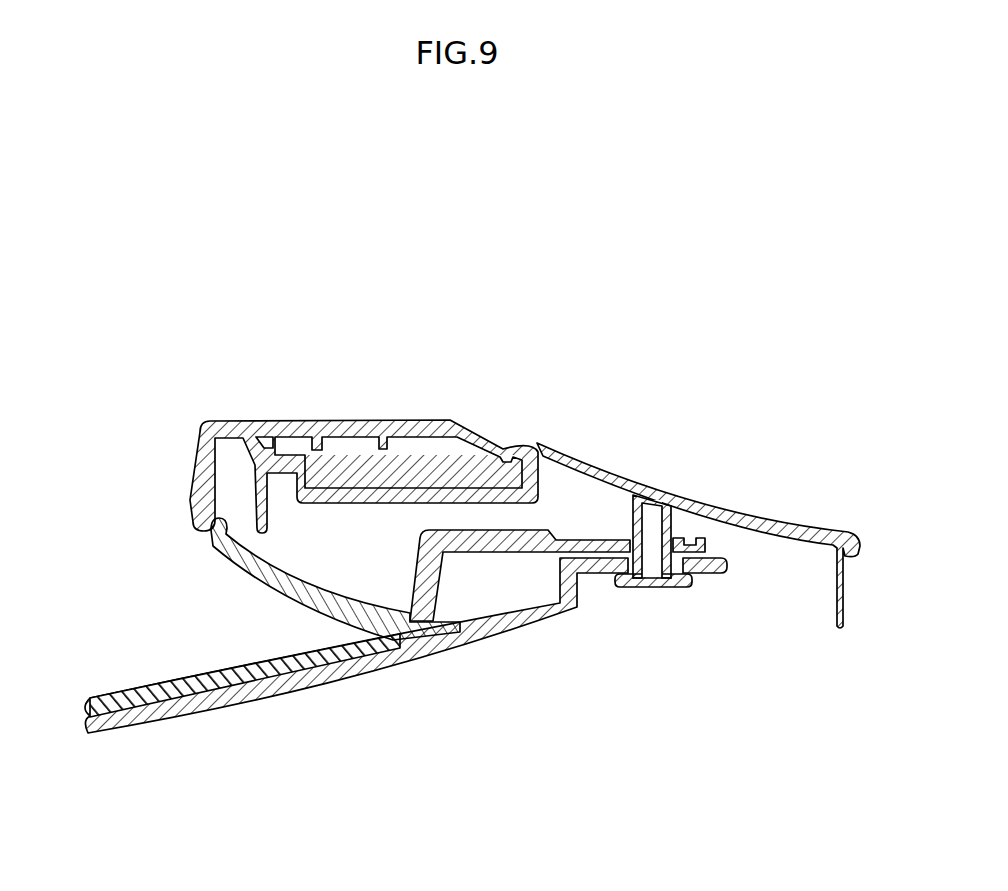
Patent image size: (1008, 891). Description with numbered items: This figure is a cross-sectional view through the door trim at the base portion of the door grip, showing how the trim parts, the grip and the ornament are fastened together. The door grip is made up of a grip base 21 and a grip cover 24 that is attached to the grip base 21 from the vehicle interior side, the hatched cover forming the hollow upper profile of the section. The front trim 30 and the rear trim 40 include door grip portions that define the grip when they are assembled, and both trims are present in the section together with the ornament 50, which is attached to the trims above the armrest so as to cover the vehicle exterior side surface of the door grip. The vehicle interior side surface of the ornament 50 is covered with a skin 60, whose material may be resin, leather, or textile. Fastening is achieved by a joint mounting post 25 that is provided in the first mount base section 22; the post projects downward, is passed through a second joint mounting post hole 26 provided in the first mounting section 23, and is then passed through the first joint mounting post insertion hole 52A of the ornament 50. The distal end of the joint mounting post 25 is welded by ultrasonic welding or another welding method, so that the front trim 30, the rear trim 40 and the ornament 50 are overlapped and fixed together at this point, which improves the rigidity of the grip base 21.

The grip base 21 is at (576, 300).
The first mount base section 22 is at (430, 490).
The first mounting section 23 is at (453, 542).
The grip cover 24 is at (405, 420).
The joint mounting post 25 is at (648, 586).
The second joint mounting post hole 26 is at (672, 514).
The front trim 30 is at (765, 515).
The rear trim 40 is at (233, 573).
The ornament 50 is at (157, 720).
The first joint mounting post insertion hole 52A is at (637, 588).
The skin 60 is at (127, 693).